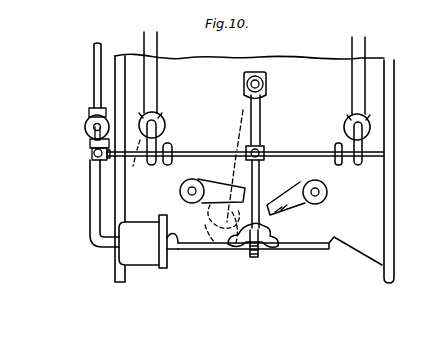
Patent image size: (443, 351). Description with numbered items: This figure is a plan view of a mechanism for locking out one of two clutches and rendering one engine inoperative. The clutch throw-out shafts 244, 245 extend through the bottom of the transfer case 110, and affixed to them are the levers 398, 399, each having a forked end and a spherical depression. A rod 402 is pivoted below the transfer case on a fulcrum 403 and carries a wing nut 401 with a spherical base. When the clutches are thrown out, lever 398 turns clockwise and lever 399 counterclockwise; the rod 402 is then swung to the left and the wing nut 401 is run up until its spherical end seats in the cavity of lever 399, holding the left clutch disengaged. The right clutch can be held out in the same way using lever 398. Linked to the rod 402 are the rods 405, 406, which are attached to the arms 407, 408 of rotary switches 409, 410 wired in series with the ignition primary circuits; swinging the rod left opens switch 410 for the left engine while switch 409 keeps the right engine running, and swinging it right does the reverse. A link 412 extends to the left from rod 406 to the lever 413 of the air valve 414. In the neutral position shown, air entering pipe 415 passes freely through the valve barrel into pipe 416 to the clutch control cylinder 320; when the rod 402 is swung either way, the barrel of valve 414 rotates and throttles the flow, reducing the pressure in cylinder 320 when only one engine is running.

The transfer case 110 is at (355, 262).
The pipe 415 is at (100, 62).
The air valve 414 is at (86, 120).
The lever 413 is at (89, 146).
The link 412 is at (100, 162).
The pipe 416 is at (93, 215).
The clutch control cylinder 320 is at (143, 258).
The rod 406 is at (172, 155).
The arm 407 is at (363, 149).
The switch 410 is at (165, 128).
The arm 408 is at (152, 163).
The switch 409 is at (370, 128).
The fulcrum 403 is at (265, 88).
The rod 402 is at (262, 106).
The rod 405 is at (264, 154).
The wing nut 401 is at (282, 256).
The clutch throw-out shaft 245 is at (182, 195).
The lever 399 is at (211, 211).
The clutch throw-out shaft 244 is at (327, 190).
The lever 398 is at (296, 208).